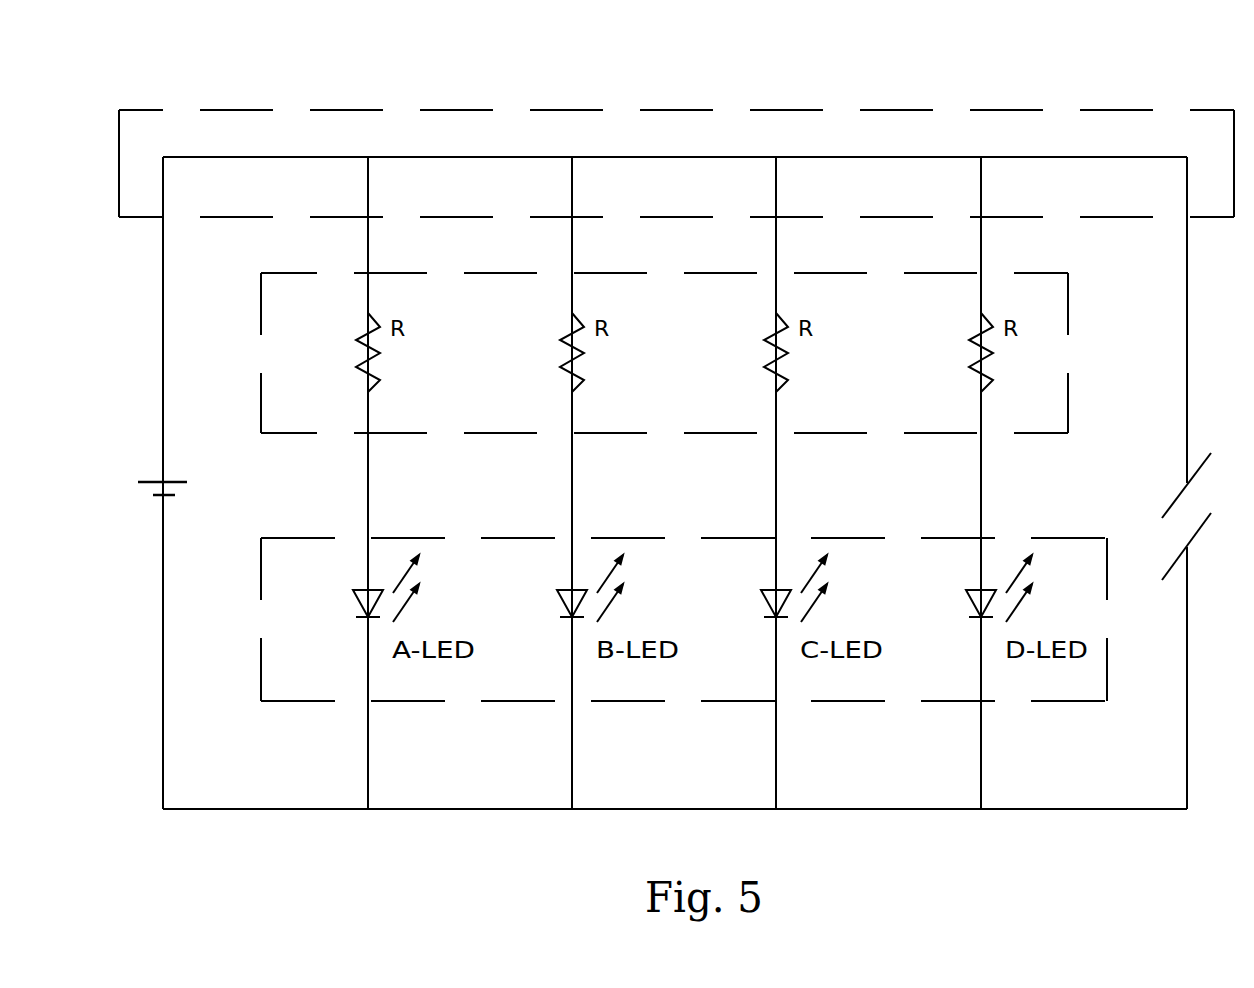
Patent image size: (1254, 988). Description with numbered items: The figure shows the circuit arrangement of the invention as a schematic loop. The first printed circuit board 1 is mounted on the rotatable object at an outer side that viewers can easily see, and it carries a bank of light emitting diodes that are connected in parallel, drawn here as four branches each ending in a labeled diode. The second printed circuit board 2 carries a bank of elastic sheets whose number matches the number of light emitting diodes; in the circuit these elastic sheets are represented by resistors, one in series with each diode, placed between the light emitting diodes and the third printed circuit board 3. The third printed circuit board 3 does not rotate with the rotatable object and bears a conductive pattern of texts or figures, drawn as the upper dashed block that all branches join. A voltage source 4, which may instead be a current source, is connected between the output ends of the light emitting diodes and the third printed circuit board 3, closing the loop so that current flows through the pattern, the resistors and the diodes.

The first printed circuit board 1 is at (280, 655).
The second printed circuit board 2 is at (288, 378).
The third printed circuit board 3 is at (278, 123).
The voltage source 4 is at (155, 480).